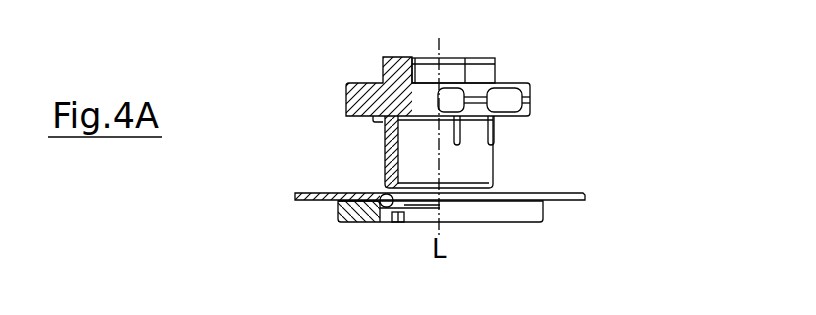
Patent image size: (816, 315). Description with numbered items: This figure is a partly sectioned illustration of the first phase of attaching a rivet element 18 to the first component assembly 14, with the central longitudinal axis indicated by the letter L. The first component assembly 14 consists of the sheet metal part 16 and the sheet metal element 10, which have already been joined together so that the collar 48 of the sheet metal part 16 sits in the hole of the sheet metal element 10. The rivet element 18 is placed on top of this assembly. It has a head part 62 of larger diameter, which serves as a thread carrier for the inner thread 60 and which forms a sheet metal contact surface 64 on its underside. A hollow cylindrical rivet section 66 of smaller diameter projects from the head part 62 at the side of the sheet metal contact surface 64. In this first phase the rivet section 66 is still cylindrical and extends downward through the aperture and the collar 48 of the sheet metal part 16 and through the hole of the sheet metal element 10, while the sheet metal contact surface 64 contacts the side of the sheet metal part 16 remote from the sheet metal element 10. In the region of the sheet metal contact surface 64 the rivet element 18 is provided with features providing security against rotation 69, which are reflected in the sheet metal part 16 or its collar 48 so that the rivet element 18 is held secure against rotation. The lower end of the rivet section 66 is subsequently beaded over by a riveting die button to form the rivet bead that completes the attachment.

The sheet metal element 10 is at (518, 214).
The first component assembly 14 is at (614, 234).
The sheet metal part 16 is at (597, 171).
The rivet element 18 is at (523, 87).
The collar 48 is at (385, 194).
The inner thread 60 is at (425, 80).
The head part 62 is at (530, 102).
The sheet metal contact surface 64 is at (373, 118).
The rivet section 66 is at (497, 165).
The features providing security against rotation 69 is at (498, 133).